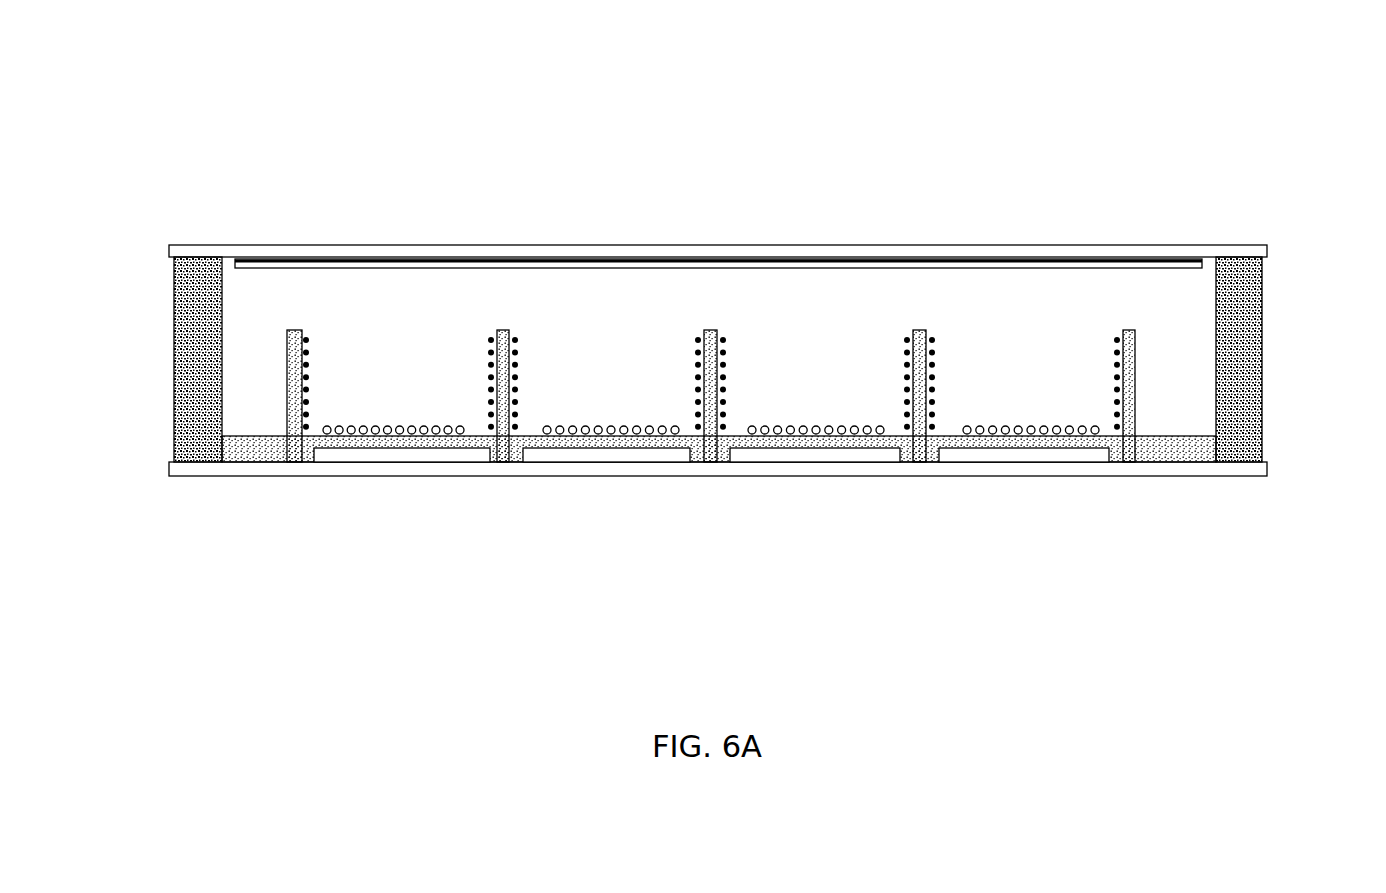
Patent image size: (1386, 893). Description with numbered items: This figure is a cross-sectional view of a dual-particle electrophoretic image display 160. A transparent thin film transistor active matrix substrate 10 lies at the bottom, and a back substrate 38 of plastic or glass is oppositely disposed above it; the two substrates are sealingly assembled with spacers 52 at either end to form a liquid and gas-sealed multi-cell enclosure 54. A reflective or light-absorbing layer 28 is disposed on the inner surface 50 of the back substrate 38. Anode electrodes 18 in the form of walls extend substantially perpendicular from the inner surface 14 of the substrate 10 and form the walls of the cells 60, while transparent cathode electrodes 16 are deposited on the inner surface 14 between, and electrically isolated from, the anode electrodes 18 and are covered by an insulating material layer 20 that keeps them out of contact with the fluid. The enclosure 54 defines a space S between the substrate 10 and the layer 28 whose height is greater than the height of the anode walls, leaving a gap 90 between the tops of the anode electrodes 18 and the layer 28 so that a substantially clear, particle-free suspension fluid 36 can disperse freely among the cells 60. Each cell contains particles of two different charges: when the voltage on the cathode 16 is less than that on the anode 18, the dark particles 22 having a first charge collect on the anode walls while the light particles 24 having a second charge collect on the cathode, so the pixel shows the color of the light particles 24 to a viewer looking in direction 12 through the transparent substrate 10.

The dual-particle electrophoretic image display 160 is at (705, 140).
The back substrate 38 is at (270, 240).
The layer 28 is at (428, 266).
The gap 90 is at (498, 298).
The anode electrodes 18 is at (700, 330).
The multi-cell enclosure 54 is at (757, 300).
The spacers 52 is at (172, 310).
The inner surface of the back substrate 50 is at (351, 272).
The dark electrophoretic pigment particles 22 is at (310, 388).
The light electrophoretic pigment particles 24 is at (416, 424).
The electrophoretic suspension fluid 36 is at (629, 309).
The inner surface of the TFT active matrix substrate 14 is at (1192, 462).
The cathode electrodes 16 is at (335, 462).
The TFT active matrix substrate 10 is at (195, 472).
The light output direction 12 is at (712, 513).
The insulating material layer 20 is at (1160, 452).
The cells 60 is at (957, 408).
The space S is at (258, 278).